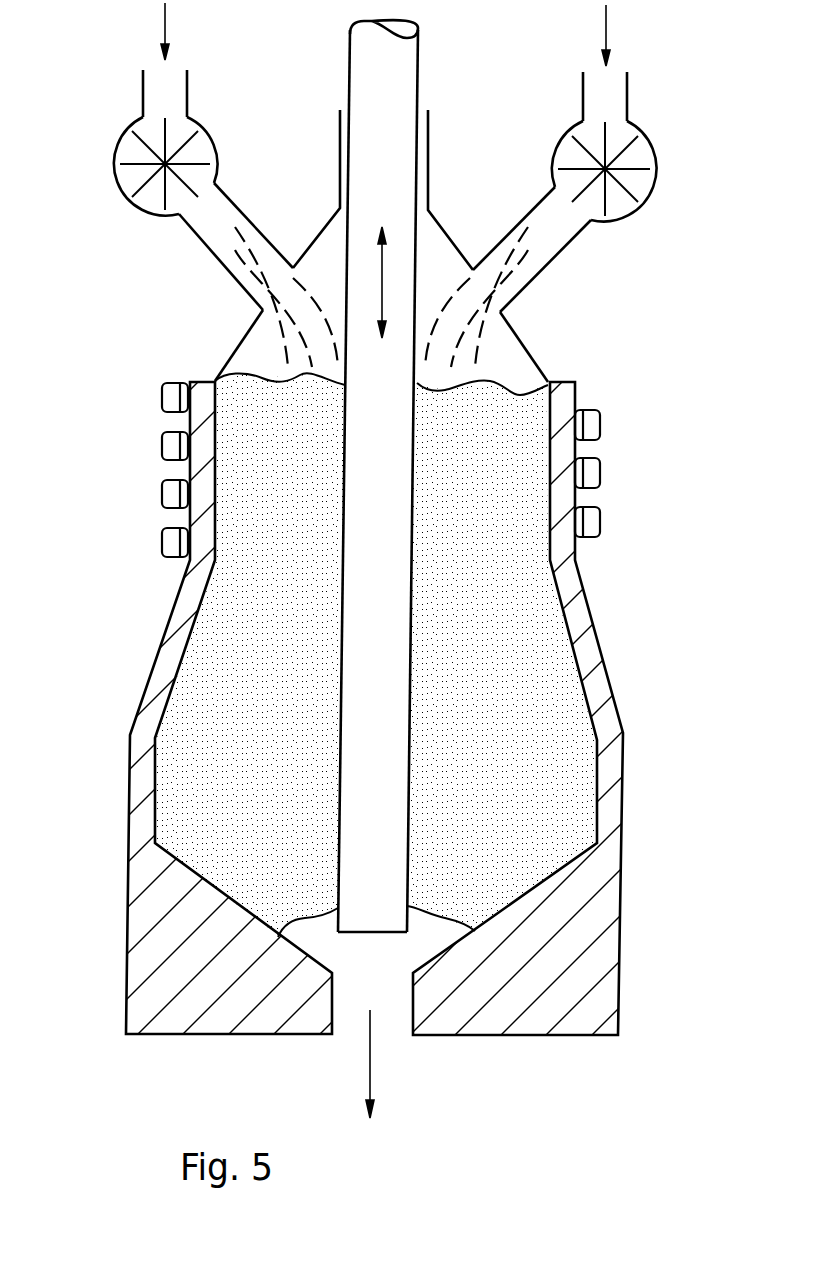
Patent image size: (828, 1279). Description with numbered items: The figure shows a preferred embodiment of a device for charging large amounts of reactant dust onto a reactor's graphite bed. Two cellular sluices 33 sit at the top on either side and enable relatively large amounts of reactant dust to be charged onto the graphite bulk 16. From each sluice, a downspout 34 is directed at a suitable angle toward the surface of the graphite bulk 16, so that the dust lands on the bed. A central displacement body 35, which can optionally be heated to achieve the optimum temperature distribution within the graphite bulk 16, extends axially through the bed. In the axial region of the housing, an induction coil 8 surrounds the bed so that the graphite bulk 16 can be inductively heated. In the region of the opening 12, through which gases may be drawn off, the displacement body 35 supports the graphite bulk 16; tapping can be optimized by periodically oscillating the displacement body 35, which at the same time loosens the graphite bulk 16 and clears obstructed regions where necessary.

The induction coil 8 is at (172, 498).
The opening 12 is at (388, 1005).
The graphite bulk 16 is at (248, 675).
The cellular sluices 33 is at (117, 146).
The downspouts 34 is at (203, 247).
The displacement body 35 is at (385, 88).